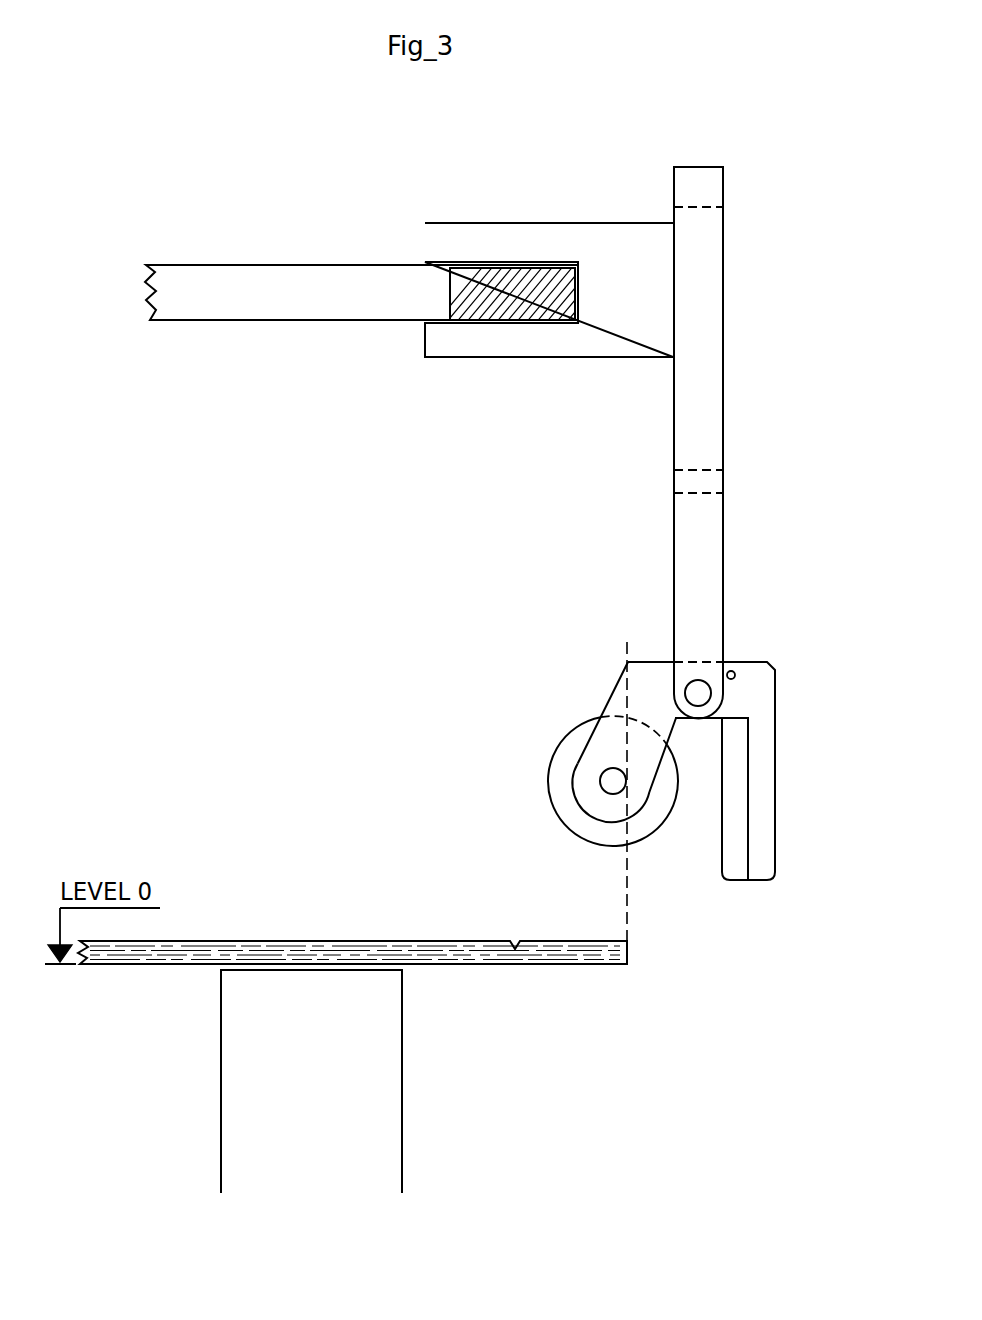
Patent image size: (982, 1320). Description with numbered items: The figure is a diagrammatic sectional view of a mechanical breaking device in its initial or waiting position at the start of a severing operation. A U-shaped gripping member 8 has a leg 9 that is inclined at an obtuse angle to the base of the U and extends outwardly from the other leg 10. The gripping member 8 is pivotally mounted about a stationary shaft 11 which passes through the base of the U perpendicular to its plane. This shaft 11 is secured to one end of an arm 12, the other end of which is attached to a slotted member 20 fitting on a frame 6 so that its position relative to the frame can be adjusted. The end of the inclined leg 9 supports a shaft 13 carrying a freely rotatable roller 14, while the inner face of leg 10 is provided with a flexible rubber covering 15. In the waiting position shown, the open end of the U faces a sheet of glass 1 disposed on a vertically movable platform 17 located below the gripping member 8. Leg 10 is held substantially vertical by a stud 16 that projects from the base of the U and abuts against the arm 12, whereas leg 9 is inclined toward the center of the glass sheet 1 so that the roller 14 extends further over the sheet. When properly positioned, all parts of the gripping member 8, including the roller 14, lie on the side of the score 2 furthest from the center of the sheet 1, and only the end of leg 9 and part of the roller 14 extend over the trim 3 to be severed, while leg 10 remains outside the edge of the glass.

The sheet of glass 1 is at (202, 950).
The score 2 is at (513, 938).
The trim 3 is at (562, 955).
The frame 6 is at (315, 307).
The gripping member 8 is at (758, 879).
The leg 9 is at (610, 700).
The leg 10 is at (763, 865).
The shaft 11 is at (686, 687).
The arm 12 is at (702, 397).
The shaft 13 is at (604, 777).
The roller 14 is at (587, 830).
The flexible rubber covering 15 is at (735, 865).
The stud 16 is at (735, 671).
The platform 17 is at (260, 1105).
The slotted member 20 is at (612, 250).